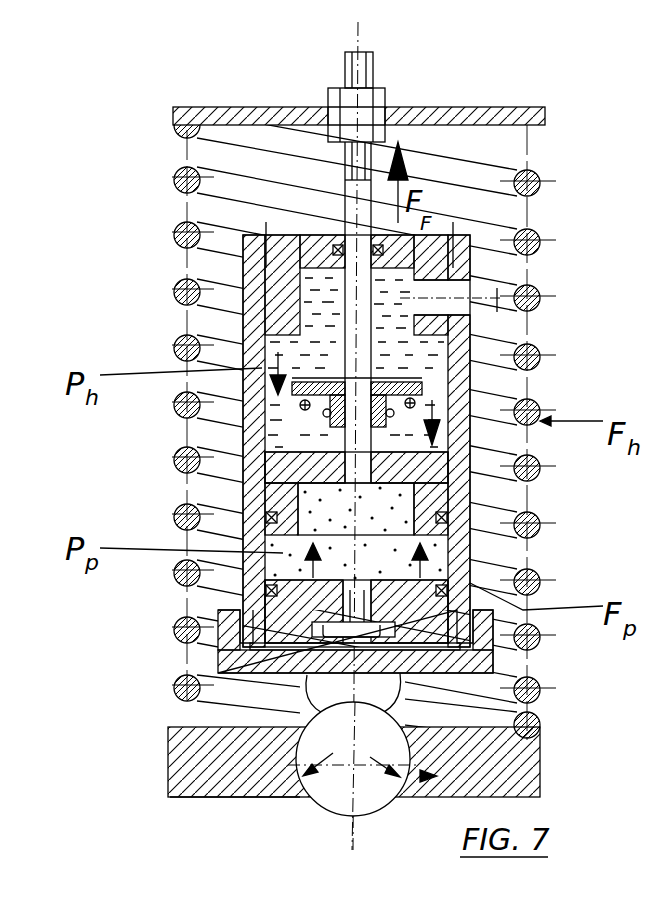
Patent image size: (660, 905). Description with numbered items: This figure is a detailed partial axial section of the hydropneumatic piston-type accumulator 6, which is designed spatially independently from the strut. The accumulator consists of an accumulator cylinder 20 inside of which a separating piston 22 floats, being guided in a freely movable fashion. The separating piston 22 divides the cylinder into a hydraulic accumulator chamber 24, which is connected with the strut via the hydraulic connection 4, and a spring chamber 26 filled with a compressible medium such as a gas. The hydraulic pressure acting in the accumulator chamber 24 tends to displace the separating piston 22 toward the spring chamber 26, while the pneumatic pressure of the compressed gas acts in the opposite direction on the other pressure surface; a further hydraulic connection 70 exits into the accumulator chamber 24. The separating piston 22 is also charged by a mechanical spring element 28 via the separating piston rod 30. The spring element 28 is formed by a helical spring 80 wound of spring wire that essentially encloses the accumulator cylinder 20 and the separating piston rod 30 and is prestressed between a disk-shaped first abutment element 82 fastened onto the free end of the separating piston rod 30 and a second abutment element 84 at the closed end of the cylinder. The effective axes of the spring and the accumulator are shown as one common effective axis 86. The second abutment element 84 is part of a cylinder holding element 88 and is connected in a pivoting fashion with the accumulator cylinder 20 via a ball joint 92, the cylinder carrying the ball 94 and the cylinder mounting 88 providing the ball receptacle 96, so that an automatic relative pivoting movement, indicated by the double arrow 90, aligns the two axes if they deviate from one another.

The hydraulic connection 4 is at (480, 305).
The piston-type accumulator 6 is at (480, 497).
The accumulator cylinder 20 is at (465, 553).
The separating piston 22 is at (296, 468).
The hydraulic accumulator chamber 24 is at (410, 357).
The spring chamber 26 is at (290, 580).
The mechanical spring element 28 is at (522, 150).
The separating piston rod 30 is at (350, 209).
The hydraulic connection 70 is at (480, 287).
The helical spring 80 is at (500, 226).
The first abutment element 82 is at (440, 107).
The second abutment element 84 is at (497, 745).
The common effective axis 86 is at (360, 35).
The cylinder holding element 88 is at (215, 806).
The double arrow 90 is at (380, 699).
The ball joint 92 is at (437, 774).
The ball 94 is at (335, 797).
The ball receptacle 96 is at (354, 776).